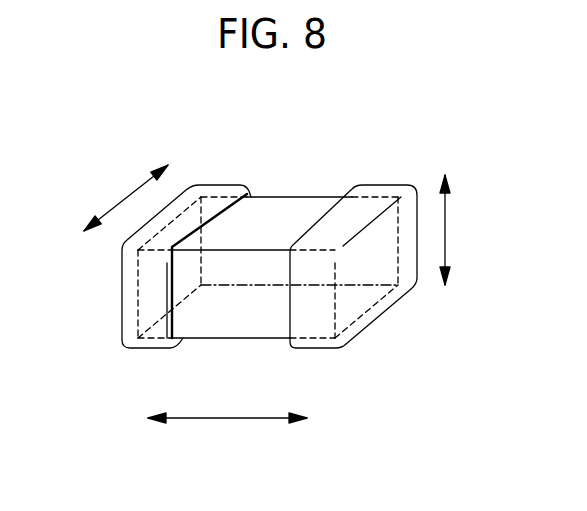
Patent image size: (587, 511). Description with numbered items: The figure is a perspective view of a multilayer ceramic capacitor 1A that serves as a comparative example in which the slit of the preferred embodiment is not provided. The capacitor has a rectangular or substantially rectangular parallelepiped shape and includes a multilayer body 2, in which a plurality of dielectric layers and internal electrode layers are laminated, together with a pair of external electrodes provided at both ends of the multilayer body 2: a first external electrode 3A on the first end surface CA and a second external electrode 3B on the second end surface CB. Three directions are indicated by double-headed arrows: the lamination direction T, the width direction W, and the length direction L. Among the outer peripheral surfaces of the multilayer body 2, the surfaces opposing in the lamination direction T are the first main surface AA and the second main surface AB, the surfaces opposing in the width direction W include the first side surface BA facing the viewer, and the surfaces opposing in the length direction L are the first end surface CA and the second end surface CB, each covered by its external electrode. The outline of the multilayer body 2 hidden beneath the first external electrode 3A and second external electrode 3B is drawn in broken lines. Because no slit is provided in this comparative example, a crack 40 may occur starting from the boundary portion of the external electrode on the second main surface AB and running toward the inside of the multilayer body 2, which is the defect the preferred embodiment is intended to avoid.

The multilayer ceramic capacitor 1A is at (289, 178).
The multilayer body 2 is at (256, 197).
The first external electrode 3A is at (207, 186).
The second external electrode 3B is at (375, 189).
The first main surface AA is at (310, 208).
The second main surface AB is at (255, 339).
The first side surface BA is at (231, 294).
The first end surface CA is at (121, 292).
The second end surface CB is at (378, 289).
The crack 40 is at (190, 314).
The width direction W is at (126, 198).
The lamination direction T is at (456, 230).
The length direction L is at (227, 431).